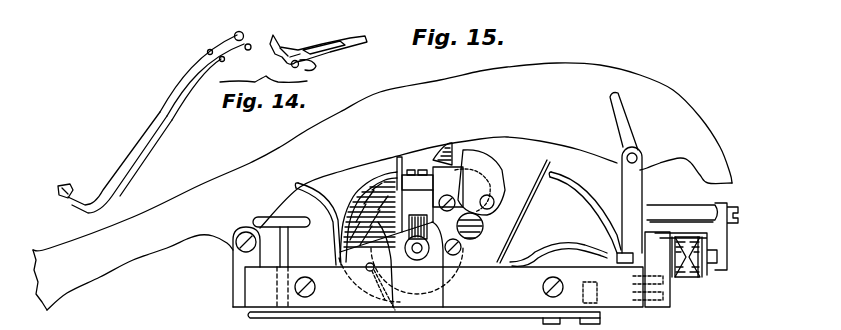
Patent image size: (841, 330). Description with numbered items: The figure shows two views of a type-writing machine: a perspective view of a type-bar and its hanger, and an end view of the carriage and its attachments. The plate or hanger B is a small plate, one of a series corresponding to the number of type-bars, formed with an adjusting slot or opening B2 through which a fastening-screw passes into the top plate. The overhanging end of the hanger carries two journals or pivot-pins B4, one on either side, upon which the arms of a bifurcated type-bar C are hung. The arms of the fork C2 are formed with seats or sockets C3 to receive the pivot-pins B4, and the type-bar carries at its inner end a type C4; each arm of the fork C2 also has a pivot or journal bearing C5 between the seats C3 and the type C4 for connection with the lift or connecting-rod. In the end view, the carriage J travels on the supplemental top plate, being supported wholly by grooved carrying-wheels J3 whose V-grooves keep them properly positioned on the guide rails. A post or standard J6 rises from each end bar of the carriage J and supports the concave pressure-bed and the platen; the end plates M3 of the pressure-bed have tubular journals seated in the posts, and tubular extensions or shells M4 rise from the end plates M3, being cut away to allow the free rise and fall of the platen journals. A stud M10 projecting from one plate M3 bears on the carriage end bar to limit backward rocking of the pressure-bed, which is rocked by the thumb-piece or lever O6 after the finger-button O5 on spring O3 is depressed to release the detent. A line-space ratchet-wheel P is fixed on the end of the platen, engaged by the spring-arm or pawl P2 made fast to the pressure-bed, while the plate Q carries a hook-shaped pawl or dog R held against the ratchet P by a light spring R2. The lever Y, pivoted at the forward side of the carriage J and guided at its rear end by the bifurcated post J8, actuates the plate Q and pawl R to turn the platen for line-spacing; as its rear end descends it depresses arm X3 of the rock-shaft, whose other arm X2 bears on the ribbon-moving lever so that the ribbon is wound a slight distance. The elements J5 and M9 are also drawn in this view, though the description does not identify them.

In FIG. 14, the bifurcated type-bar C is at (120, 162).
In FIG. 14, the fork C2 is at (195, 95).
In FIG. 14, the seats or sockets C3 is at (246, 58).
In FIG. 14, the type C4 is at (66, 183).
In FIG. 14, the pivot or journal bearing C5 is at (226, 68).
In FIG. 14, the plate or hanger B is at (322, 42).
In FIG. 14, the adjusting slot or opening B2 is at (352, 40).
In FIG. 14, the journals or pivot-pins B4 is at (313, 71).
In FIG. 15, the lever Y is at (382, 186).
In FIG. 15, the spring O3 is at (424, 321).
In FIG. 15, the finger-button O5 is at (281, 254).
In FIG. 15, the thumb-piece or lever O6 is at (318, 223).
In FIG. 15, the line-space ratchet-wheel P is at (386, 244).
In FIG. 15, the spring-arm or pawl P2 is at (368, 217).
In FIG. 15, the hook-shaped pawl or dog R is at (469, 179).
In FIG. 15, the light spring R2 is at (443, 168).
In FIG. 15, the end plates M3 is at (460, 250).
In FIG. 15, the tubular extensions or shells M4 is at (432, 237).
In FIG. 15, the rod M9 is at (523, 210).
In FIG. 15, the stud M10 is at (370, 272).
In FIG. 15, the plate Q is at (477, 226).
In FIG. 15, the carriage J is at (448, 267).
In FIG. 15, the grooved carrying-wheel J3 is at (688, 280).
In FIG. 15, the bracket J5 is at (691, 255).
In FIG. 15, the post or standard J6 is at (401, 258).
In FIG. 15, the bifurcated post J8 is at (626, 178).
In FIG. 15, the forwardly-extending arm X2 is at (558, 250).
In FIG. 15, the arm X3 is at (585, 212).